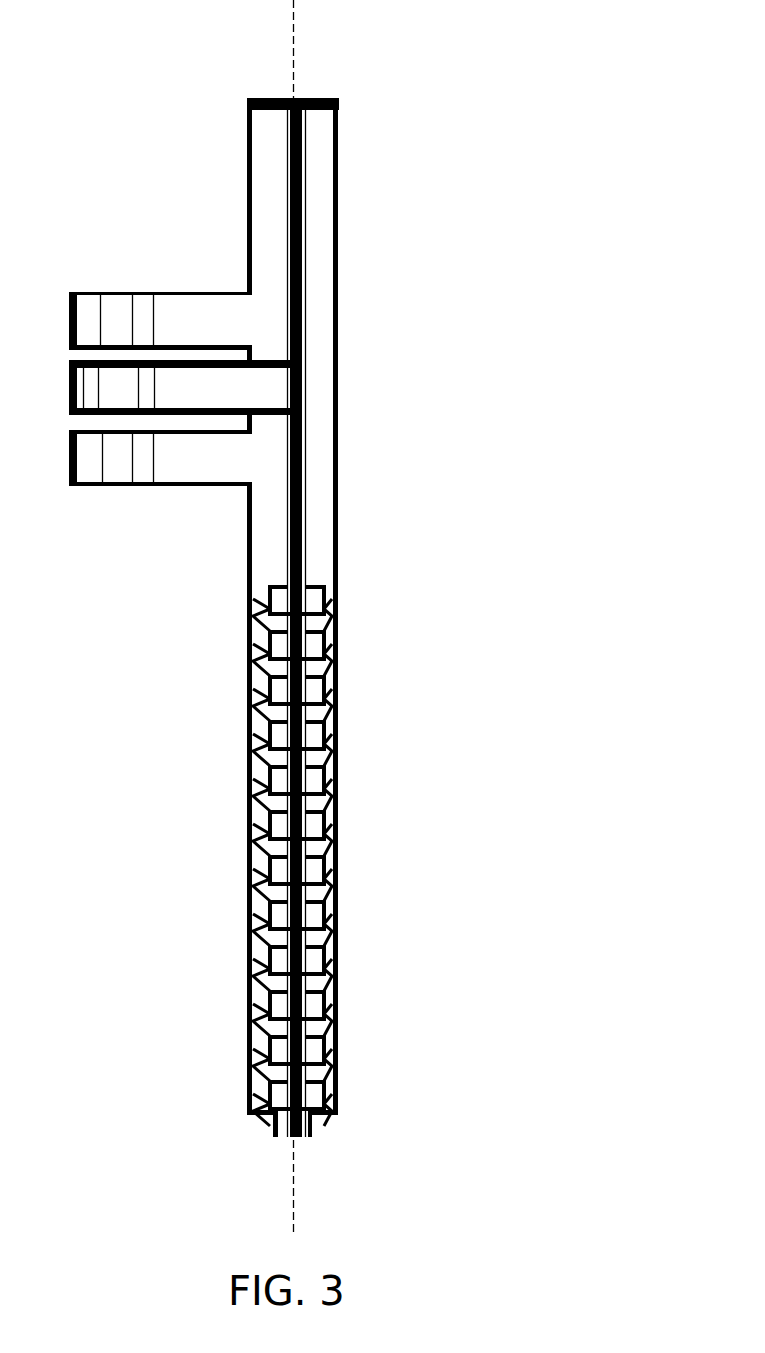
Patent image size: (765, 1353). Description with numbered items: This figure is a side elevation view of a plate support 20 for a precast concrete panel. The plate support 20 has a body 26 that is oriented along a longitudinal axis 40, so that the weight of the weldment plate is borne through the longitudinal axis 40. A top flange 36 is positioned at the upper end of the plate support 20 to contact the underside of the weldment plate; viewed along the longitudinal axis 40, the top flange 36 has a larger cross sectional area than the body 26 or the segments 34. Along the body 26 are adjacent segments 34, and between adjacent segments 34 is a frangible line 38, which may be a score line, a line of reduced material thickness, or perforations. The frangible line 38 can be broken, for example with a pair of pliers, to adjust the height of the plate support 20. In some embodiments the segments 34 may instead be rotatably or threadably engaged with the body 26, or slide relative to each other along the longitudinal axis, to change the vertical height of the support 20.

The plate support 20 is at (464, 561).
The body 26 is at (320, 452).
The segments 34 is at (325, 1093).
The top flange 36 is at (338, 110).
The frangible line 38 is at (337, 1070).
The longitudinal axis 40 is at (295, 1160).